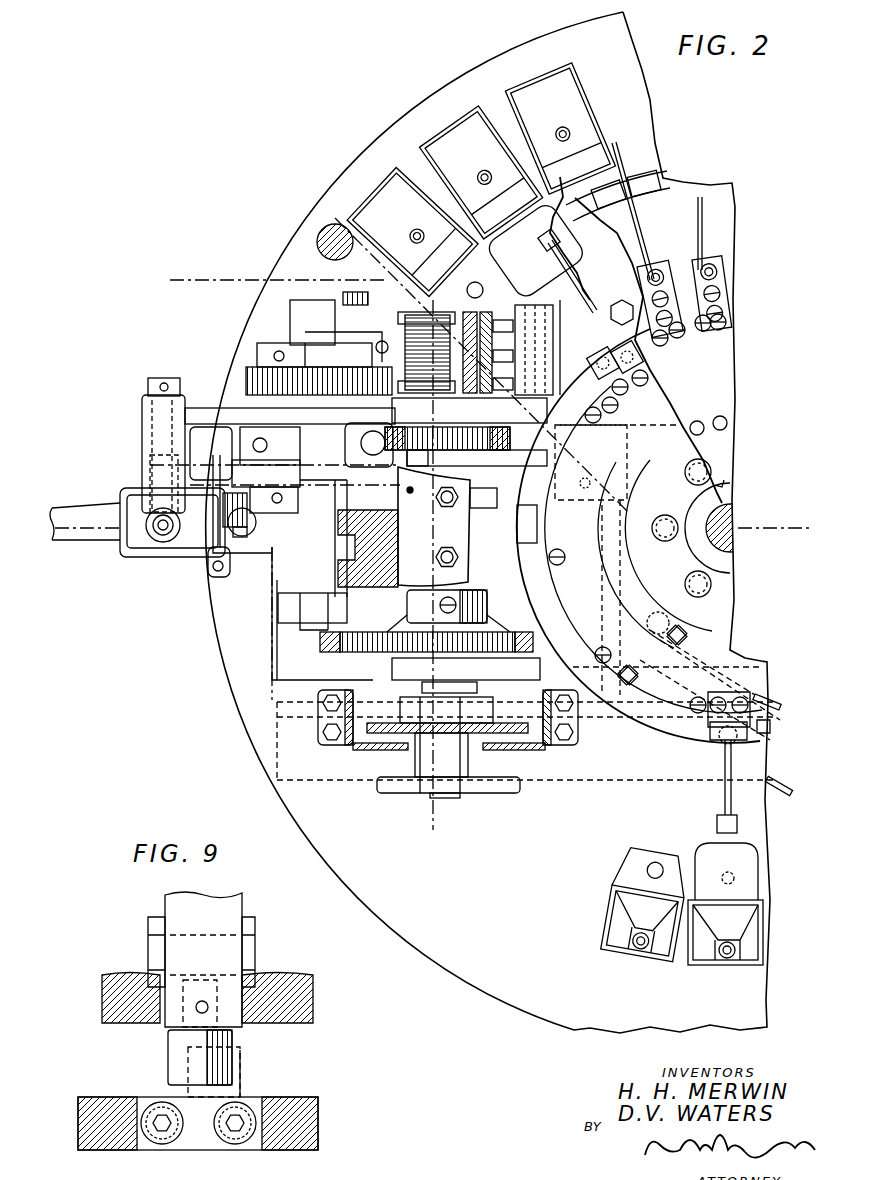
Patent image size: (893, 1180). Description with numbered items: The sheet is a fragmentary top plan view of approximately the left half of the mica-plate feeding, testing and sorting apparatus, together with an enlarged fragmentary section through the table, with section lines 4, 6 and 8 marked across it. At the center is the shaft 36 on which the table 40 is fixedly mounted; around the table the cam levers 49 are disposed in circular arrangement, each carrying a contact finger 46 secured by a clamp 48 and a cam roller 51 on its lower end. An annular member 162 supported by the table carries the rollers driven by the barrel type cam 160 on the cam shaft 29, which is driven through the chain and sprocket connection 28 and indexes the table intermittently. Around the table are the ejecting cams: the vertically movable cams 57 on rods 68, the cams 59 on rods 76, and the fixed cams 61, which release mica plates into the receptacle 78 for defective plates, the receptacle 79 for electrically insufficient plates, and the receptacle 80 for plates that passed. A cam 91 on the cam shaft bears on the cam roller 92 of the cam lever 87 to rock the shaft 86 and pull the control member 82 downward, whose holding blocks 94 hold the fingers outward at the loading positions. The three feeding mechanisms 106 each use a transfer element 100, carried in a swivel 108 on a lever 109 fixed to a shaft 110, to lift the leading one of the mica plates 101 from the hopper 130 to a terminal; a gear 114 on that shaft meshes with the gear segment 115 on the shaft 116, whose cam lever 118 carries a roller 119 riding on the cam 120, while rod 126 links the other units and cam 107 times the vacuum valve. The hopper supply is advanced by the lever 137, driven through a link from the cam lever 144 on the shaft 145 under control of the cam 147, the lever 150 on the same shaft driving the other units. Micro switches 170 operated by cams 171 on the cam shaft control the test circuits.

In FIG. 2, the section line 4- 4 is at (55, 520).
In FIG. 2, the section line 6- 6 is at (195, 253).
In FIG. 2, the section line 8- 8 is at (631, 521).
In FIG. 2, the chain and sprocket connection 28 is at (383, 738).
In FIG. 2, the cam shaft 29 is at (440, 797).
In FIG. 2, the shaft 36 is at (728, 518).
In FIG. 9, the table 40 is at (313, 1003).
In FIG. 2, the contact fingers 46 is at (698, 218).
In FIG. 2, the clamps 48 is at (723, 300).
In FIG. 9, the cam levers 49 is at (240, 915).
In FIG. 9, the cam rollers 51 is at (222, 1042).
In FIG. 2, the cams 57 is at (762, 727).
In FIG. 2, the cams 59 is at (720, 740).
In FIG. 2, the fixed cams 61 is at (673, 737).
In FIG. 2, the rod 68 is at (608, 382).
In FIG. 2, the rod 76 is at (592, 310).
In FIG. 2, the receptacle 78 is at (375, 210).
In FIG. 2, the receptacle 79 is at (440, 143).
In FIG. 2, the receptacle 80 is at (522, 93).
In FIG. 9, the control member 82 is at (315, 1112).
In FIG. 2, the shaft 86 is at (605, 600).
In FIG. 2, the cam lever 87 is at (510, 460).
In FIG. 2, the cam 91 is at (500, 440).
In FIG. 2, the cam roller 92 is at (417, 437).
In FIG. 9, the holding blocks 94 is at (236, 1085).
In FIG. 2, the transfer element 100 is at (168, 535).
In FIG. 2, the articles 101 is at (143, 543).
In FIG. 2, the feeding mechanisms 106 is at (221, 380).
In FIG. 2, the cam 107 is at (270, 345).
In FIG. 2, the swivel 108 is at (200, 407).
In FIG. 2, the lever 109 is at (200, 477).
In FIG. 2, the shaft 110 is at (157, 517).
In FIG. 2, the gear 114 is at (248, 370).
In FIG. 2, the gear segment 115 is at (343, 380).
In FIG. 2, the shaft 116 is at (277, 582).
In FIG. 2, the cam lever 118 is at (280, 618).
In FIG. 2, the roller 119 is at (325, 650).
In FIG. 2, the cam 120 is at (380, 345).
In FIG. 2, the rod 126 is at (785, 783).
In FIG. 2, the hopper 130 is at (135, 557).
In FIG. 2, the lever 137 is at (107, 530).
In FIG. 2, the cam lever 144 is at (378, 478).
In FIG. 2, the shaft 145 is at (780, 698).
In FIG. 2, the cam 147 is at (490, 497).
In FIG. 2, the lever 150 is at (318, 302).
In FIG. 2, the barrel type cam 160 is at (370, 583).
In FIG. 2, the annular member 162 is at (460, 527).
In FIG. 2, the micro switches 170 is at (522, 330).
In FIG. 2, the cams 171 is at (410, 318).